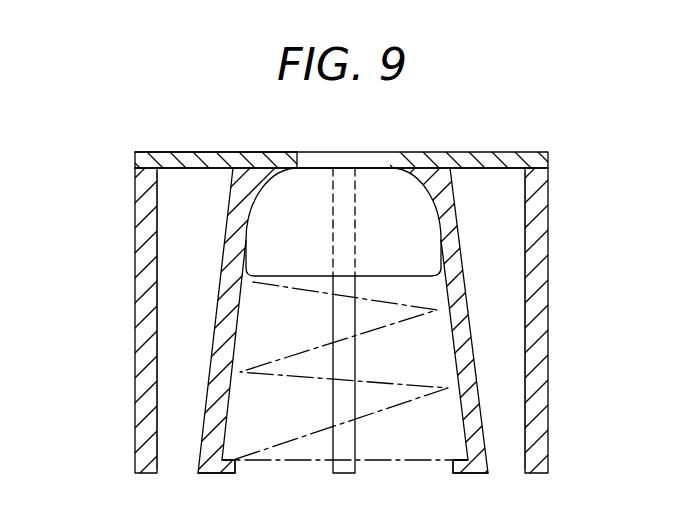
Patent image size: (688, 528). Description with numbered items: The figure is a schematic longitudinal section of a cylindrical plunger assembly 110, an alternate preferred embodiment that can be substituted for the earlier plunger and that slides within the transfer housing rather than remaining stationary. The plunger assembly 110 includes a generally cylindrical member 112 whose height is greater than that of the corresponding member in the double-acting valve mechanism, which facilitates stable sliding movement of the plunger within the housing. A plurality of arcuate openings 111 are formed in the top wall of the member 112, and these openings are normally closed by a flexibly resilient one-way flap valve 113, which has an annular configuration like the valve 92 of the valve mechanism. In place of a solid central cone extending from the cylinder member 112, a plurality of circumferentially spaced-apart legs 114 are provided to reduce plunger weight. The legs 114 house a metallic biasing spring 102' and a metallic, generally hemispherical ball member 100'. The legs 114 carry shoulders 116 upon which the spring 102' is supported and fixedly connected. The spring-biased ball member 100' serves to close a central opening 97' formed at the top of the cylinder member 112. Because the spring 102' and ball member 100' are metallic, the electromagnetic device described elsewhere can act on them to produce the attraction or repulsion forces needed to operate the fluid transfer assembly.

The cylindrical plunger assembly 110 is at (99, 136).
The one-way flap valve 113 is at (173, 153).
The arcuate openings 111 is at (198, 178).
The ball member 100' is at (343, 188).
The central opening 97' is at (352, 134).
The valve 92 is at (522, 153).
The cylindrical member 112 is at (135, 180).
The legs 114 is at (215, 328).
The shoulders 116 is at (230, 474).
The biasing spring 102' is at (350, 341).